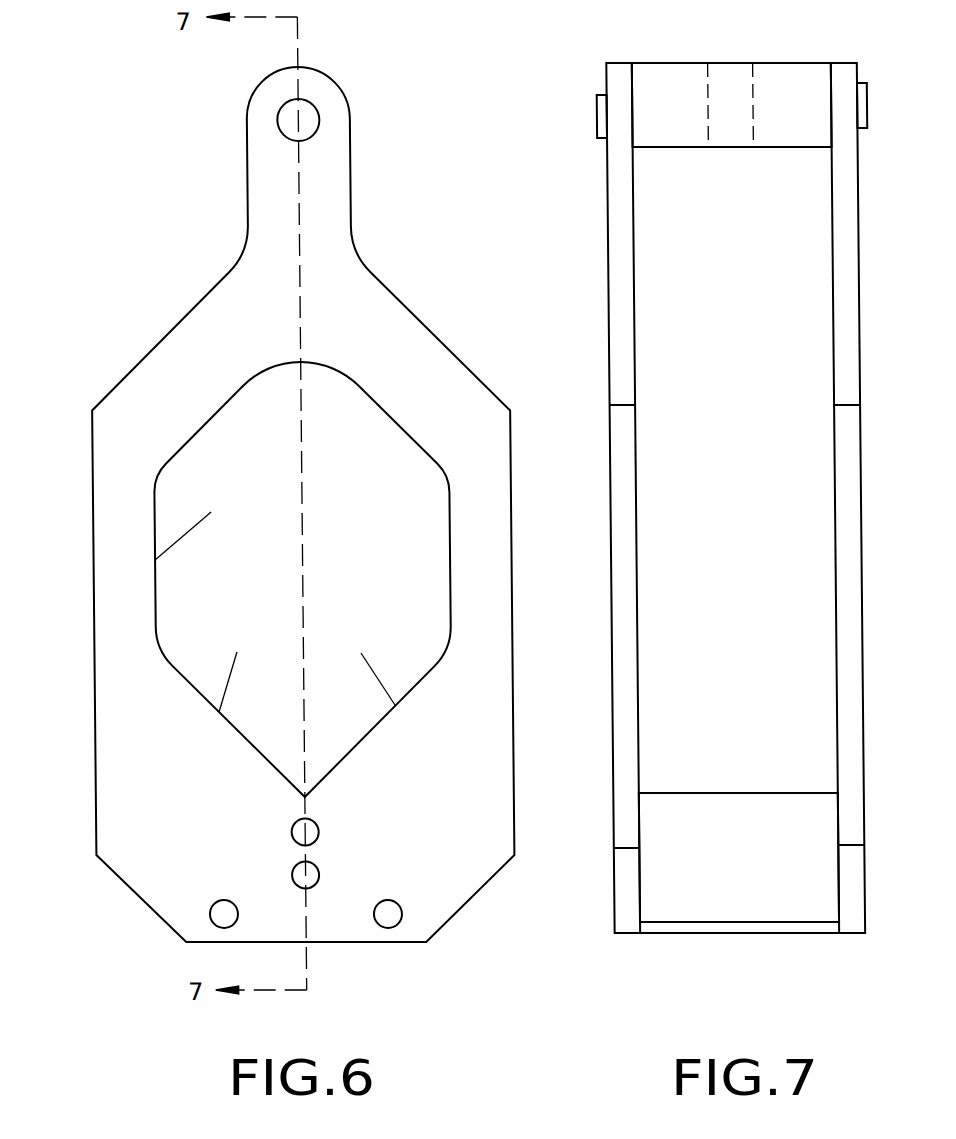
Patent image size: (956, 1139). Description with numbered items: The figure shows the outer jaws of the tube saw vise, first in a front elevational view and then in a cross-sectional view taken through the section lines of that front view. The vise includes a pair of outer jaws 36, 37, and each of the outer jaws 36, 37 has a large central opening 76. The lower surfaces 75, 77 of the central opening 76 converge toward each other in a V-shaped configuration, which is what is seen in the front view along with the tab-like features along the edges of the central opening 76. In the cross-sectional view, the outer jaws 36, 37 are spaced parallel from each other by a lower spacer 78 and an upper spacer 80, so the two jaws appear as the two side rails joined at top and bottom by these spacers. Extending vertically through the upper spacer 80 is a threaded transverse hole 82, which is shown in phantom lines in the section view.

In FIG. 6, the outer jaw 36 is at (423, 322).
In FIG. 7, the outer jaw 36 is at (607, 248).
In FIG. 7, the outer jaw 37 is at (862, 277).
In FIG. 6, the lower surface 75 is at (236, 652).
In FIG. 6, the central opening 76 is at (211, 512).
In FIG. 6, the lower surface 77 is at (360, 653).
In FIG. 7, the lower spacer 78 is at (699, 857).
In FIG. 7, the upper spacer 80 is at (786, 100).
In FIG. 7, the threaded transverse hole 82 is at (708, 82).